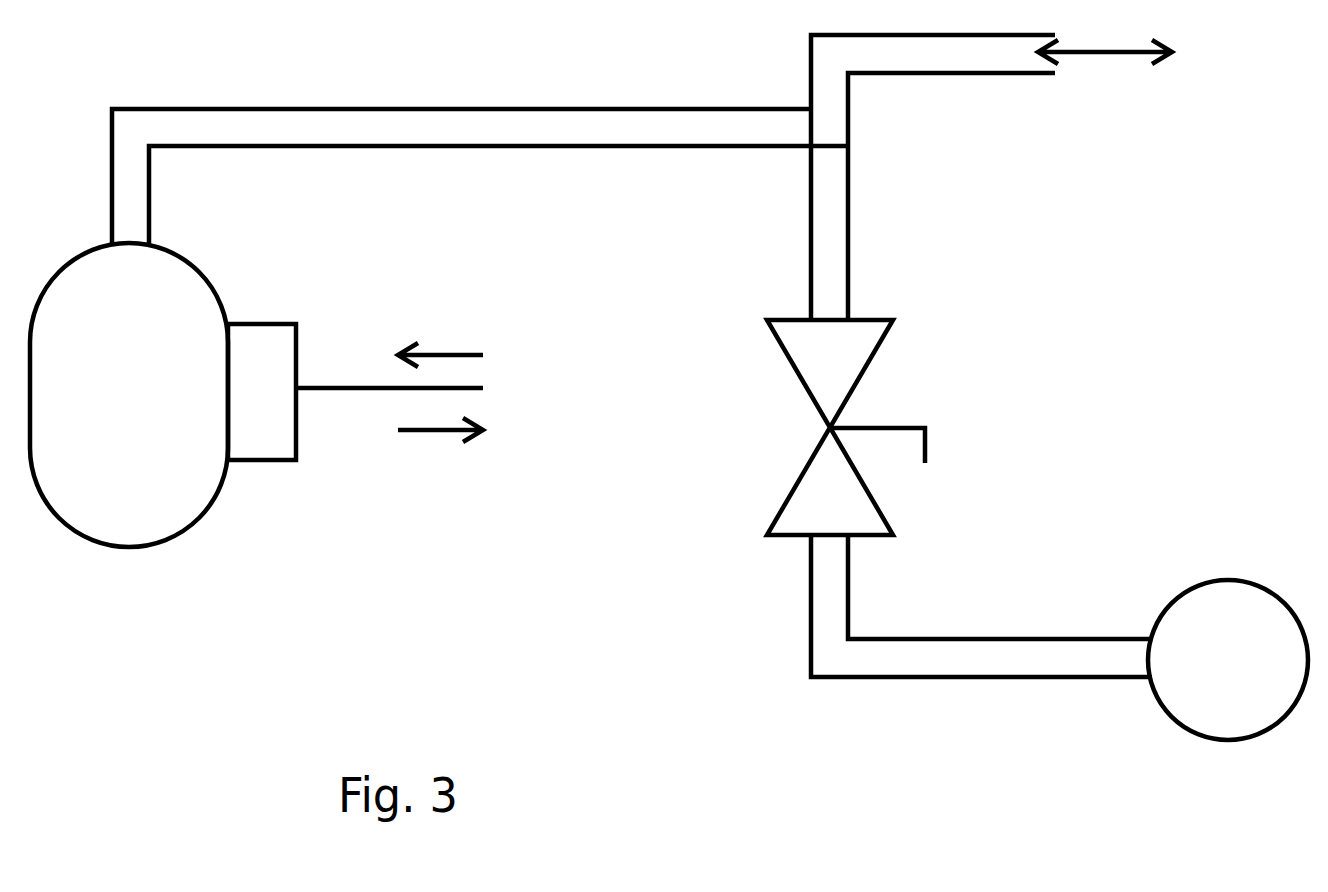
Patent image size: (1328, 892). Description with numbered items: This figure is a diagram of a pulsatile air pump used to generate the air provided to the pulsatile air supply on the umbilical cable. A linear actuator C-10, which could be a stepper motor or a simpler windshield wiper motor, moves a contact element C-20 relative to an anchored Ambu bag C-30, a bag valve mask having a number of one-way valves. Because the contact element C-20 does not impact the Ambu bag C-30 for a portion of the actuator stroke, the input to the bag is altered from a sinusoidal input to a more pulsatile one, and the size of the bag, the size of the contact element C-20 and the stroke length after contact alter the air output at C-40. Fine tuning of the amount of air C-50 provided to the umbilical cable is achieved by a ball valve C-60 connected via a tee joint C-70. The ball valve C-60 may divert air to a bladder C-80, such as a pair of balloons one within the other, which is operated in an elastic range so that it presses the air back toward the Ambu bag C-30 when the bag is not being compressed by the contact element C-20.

The linear actuator 10 is at (433, 392).
The contact element 20 is at (297, 352).
The Ambu bag 30 is at (185, 287).
The air output 40 is at (153, 235).
The amount of air 50 is at (1170, 65).
The ball valve 60 is at (878, 363).
The tee joint 70 is at (850, 180).
The bladder 80 is at (1198, 580).